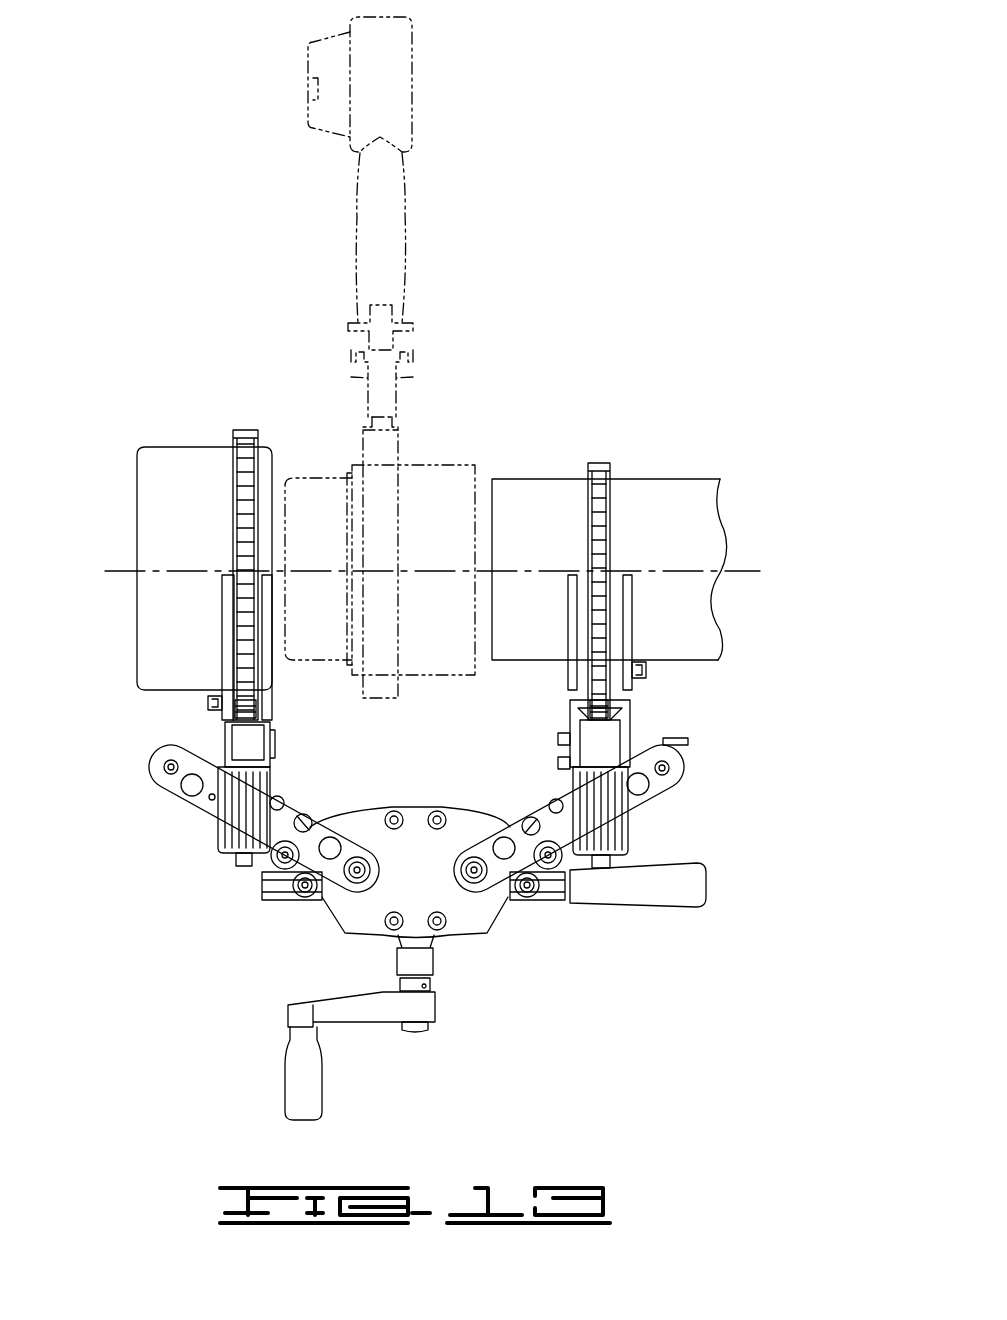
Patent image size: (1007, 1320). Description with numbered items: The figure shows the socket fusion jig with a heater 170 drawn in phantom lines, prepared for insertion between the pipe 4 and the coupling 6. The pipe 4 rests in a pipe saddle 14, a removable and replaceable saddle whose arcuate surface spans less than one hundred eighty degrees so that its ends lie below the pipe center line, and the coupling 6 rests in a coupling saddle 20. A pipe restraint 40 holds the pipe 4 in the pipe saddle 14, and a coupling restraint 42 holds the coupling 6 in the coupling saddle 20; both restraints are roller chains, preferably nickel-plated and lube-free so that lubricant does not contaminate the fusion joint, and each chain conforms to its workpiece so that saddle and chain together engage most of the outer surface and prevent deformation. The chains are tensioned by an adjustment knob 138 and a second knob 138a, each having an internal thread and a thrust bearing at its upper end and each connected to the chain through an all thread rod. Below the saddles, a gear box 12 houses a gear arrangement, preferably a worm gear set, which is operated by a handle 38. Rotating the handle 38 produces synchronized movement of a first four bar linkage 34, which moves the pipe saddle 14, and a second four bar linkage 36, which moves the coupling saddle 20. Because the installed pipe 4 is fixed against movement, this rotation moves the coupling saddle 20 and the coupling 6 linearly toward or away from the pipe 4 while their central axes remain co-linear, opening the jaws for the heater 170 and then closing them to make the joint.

The pipe 4 is at (712, 478).
The coupling 6 is at (137, 500).
The gear box 12 is at (500, 930).
The pipe saddle 14 is at (632, 625).
The coupling saddle 20 is at (222, 640).
The first four bar linkage 34 is at (540, 800).
The second four bar linkage 36 is at (310, 805).
The handle 38 is at (286, 1085).
The pipe restraint 40 is at (602, 466).
The coupling restraint 42 is at (238, 432).
The adjustment knob 138 is at (628, 832).
The second knob 138a is at (218, 835).
The heater 170 is at (463, 465).